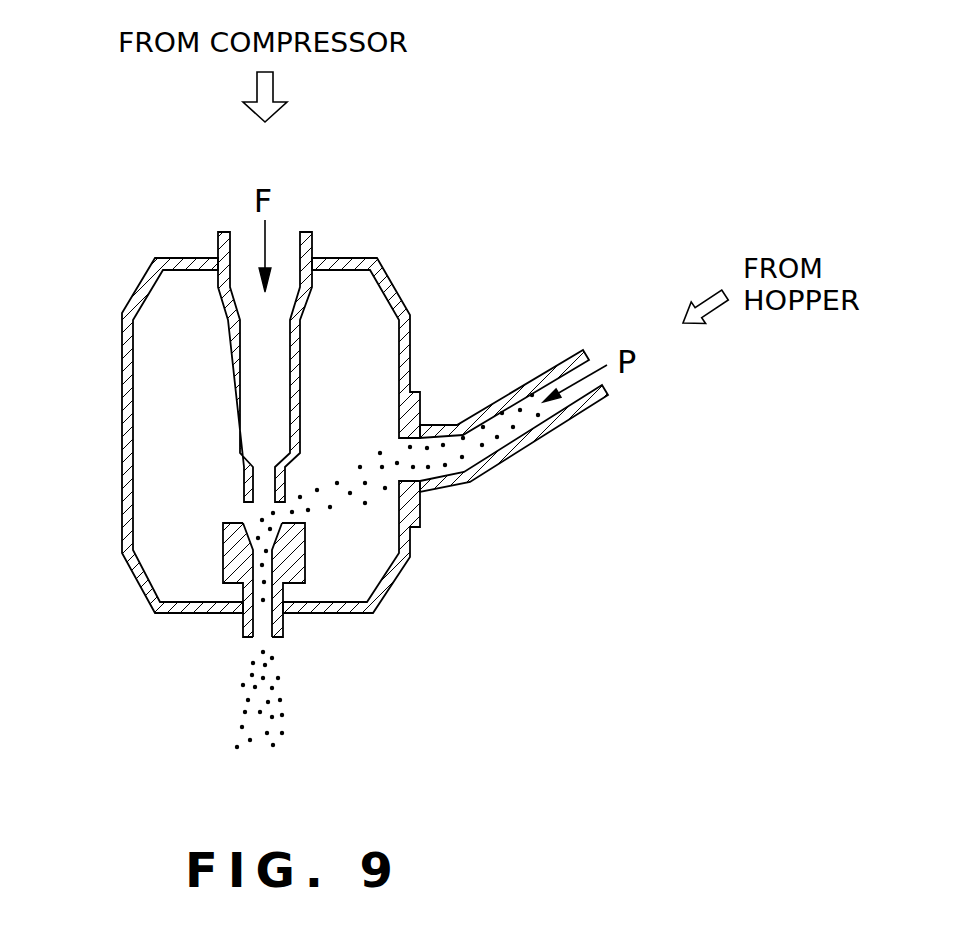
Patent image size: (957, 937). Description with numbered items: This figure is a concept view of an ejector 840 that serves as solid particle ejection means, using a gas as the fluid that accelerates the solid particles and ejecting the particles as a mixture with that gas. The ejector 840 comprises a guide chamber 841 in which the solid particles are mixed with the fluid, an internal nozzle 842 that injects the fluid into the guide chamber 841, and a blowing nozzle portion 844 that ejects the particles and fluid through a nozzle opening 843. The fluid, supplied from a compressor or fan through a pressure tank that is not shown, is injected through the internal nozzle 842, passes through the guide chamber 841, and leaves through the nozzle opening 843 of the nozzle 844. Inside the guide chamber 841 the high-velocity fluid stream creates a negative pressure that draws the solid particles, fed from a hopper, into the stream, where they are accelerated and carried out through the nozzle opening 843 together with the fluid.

The ejector 840 is at (318, 495).
The guide chamber 841 is at (170, 346).
The internal nozzle 842 is at (244, 489).
The nozzle opening 843 is at (263, 640).
The blowing nozzle portion 844 is at (243, 622).